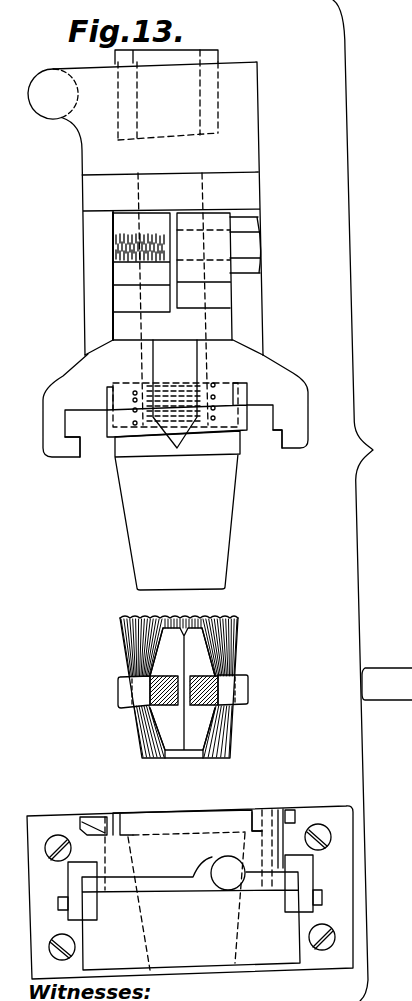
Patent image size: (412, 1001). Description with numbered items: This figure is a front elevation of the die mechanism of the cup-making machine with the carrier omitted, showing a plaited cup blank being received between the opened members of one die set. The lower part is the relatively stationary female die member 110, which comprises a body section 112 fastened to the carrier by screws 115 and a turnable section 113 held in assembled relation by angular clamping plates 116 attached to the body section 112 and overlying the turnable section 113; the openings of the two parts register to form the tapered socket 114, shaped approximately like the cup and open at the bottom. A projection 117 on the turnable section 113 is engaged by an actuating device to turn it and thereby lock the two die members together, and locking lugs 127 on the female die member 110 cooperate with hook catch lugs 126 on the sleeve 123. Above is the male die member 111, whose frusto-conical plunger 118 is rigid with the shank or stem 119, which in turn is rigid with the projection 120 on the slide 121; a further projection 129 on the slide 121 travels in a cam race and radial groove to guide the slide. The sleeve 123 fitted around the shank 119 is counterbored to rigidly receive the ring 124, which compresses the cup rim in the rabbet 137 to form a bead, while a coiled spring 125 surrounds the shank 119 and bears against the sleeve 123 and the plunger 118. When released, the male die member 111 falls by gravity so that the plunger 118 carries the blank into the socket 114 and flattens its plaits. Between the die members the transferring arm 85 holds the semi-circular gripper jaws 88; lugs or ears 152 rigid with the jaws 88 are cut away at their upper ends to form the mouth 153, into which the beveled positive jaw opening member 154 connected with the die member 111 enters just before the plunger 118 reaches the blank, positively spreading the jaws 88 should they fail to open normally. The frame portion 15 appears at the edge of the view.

The machine frame 15 is at (402, 444).
The transferring arm or lever 85 is at (385, 677).
The gripper members or jaws 88 is at (243, 688).
The female die member 110 is at (190, 883).
The male die member 111 is at (298, 337).
The body section 112 is at (191, 913).
The turnable section 113 is at (277, 837).
The tapered socket 114 is at (143, 913).
The screws 115 is at (333, 932).
The angular clamping plates 116 is at (77, 900).
The projection 117 is at (228, 880).
The plunger 118 is at (177, 510).
The shank or stem 119 is at (197, 326).
The projection 120 is at (230, 292).
The slide 121 is at (240, 123).
The sleeve 123 is at (230, 358).
The ring 124 is at (245, 417).
The coiled spring 125 is at (135, 393).
The hook catch lugs 126 is at (70, 449).
The locking lugs 127 is at (95, 823).
The projection 129 is at (42, 107).
The rabbet 137 is at (252, 815).
The lugs or ears 152 is at (167, 657).
The mouth 153 is at (200, 617).
The positive jaw opening member 154 is at (182, 438).